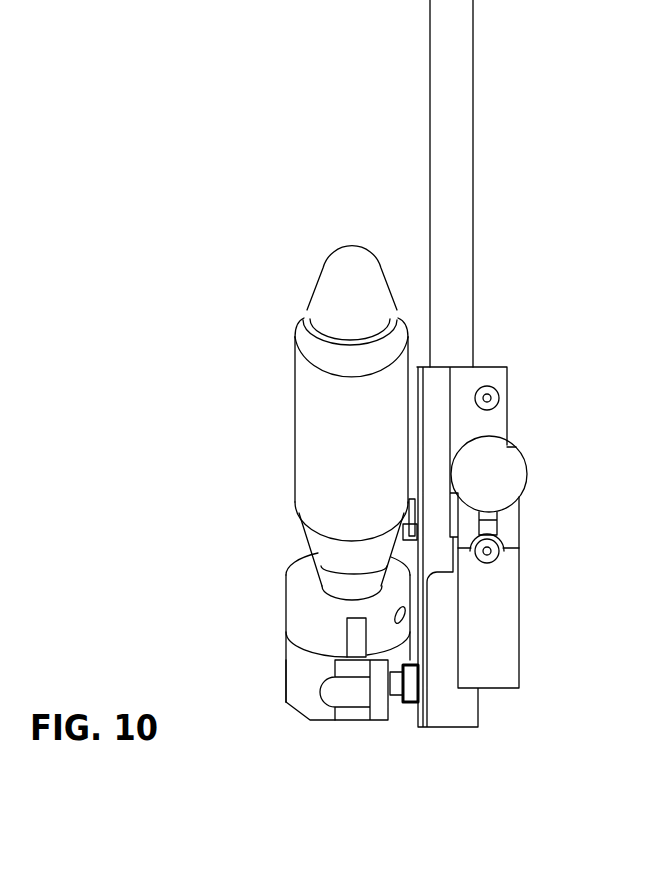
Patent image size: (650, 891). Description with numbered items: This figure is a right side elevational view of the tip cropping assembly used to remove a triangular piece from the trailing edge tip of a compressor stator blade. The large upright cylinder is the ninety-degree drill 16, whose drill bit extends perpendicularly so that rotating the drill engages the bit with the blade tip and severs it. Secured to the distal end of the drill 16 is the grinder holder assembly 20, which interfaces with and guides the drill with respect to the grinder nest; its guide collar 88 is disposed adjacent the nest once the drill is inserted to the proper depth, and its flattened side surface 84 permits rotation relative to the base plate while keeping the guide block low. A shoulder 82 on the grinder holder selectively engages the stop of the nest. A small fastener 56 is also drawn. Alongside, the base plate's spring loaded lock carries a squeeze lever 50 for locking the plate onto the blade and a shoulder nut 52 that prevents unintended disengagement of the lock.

The 90° drill 16 is at (317, 423).
The guide collar 88 is at (305, 562).
The flattened side surface 84 is at (290, 601).
The grinder holder assembly 20 is at (307, 697).
The fastener 56 is at (381, 707).
The shoulder 82 is at (366, 636).
The shoulder nut 52 is at (502, 468).
The squeeze lever 50 is at (492, 630).